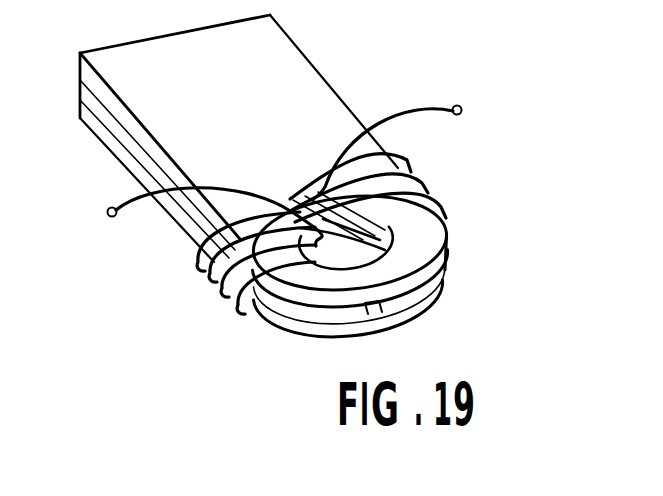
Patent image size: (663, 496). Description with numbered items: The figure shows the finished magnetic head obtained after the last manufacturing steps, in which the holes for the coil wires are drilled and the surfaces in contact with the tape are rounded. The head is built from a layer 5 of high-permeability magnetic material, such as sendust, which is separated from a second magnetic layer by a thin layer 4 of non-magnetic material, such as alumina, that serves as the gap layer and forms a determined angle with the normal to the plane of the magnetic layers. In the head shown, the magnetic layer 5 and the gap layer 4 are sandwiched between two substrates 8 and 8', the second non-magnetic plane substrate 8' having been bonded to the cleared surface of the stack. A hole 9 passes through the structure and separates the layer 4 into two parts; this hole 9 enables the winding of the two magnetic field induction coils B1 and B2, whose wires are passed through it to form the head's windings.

The hole 9 is at (315, 232).
The substrate 8 is at (377, 243).
The second non-magnetic plane substrate 8' is at (380, 308).
The layer of magnetic material 5 is at (340, 311).
The layer of non-magnetic material 4 is at (388, 308).
The magnetic field induction coil B1 is at (222, 290).
The magnetic field induction coil B2 is at (428, 185).